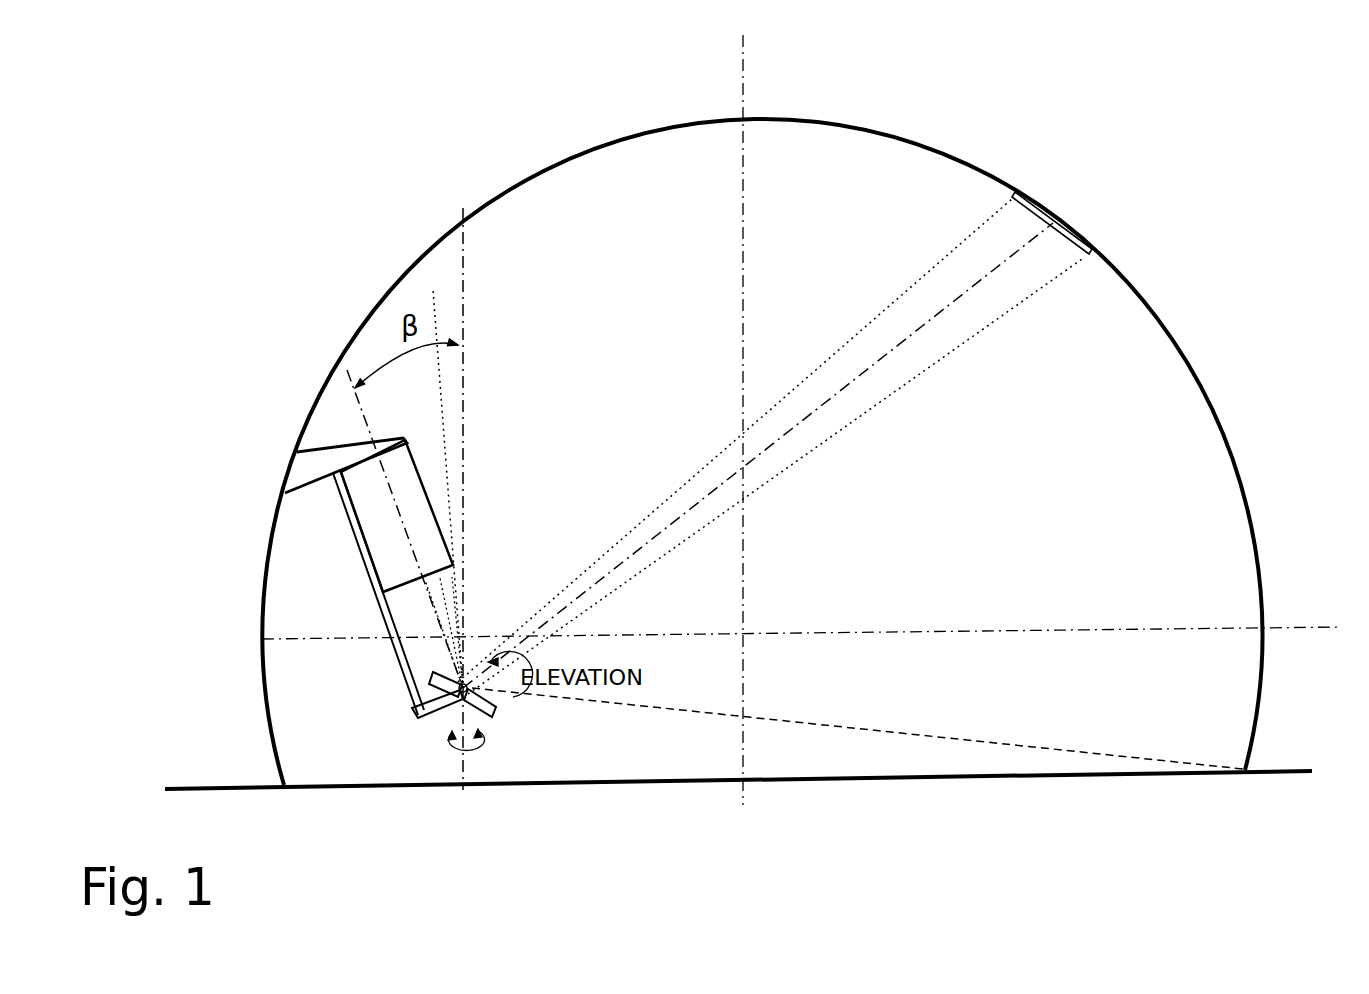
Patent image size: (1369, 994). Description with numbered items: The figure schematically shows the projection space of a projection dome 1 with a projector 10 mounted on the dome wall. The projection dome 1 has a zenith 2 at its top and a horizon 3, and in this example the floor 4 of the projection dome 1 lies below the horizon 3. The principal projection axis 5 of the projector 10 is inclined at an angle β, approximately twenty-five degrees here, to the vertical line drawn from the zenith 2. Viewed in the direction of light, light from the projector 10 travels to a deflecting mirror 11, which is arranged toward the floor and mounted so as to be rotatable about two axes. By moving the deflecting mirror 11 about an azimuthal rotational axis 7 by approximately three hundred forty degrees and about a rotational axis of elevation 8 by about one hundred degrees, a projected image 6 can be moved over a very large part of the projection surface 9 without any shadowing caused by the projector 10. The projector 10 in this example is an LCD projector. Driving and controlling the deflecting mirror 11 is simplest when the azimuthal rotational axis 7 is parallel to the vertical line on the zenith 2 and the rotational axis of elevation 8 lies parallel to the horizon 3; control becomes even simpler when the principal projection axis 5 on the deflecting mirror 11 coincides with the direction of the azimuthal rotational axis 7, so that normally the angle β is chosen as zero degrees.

The projection dome 1 is at (893, 132).
The zenith 2 is at (748, 117).
The horizon 3 is at (1282, 622).
The floor 4 is at (845, 783).
The principal projection axis 5 is at (370, 437).
The projected image 6 is at (1078, 243).
The azimuthal rotational axis 7 is at (452, 737).
The rotational axis of elevation 8 is at (506, 704).
The projection surface 9 is at (928, 157).
The projector 10 is at (375, 590).
The deflecting mirror 11 is at (493, 713).